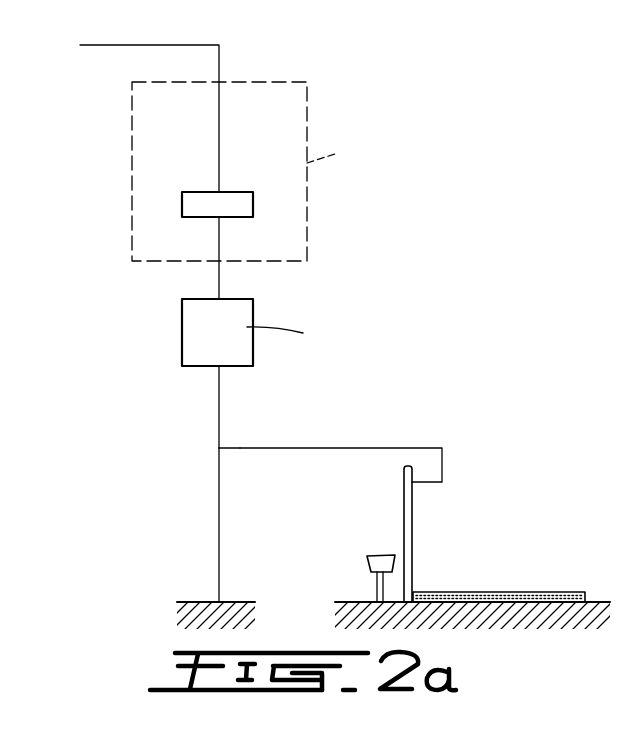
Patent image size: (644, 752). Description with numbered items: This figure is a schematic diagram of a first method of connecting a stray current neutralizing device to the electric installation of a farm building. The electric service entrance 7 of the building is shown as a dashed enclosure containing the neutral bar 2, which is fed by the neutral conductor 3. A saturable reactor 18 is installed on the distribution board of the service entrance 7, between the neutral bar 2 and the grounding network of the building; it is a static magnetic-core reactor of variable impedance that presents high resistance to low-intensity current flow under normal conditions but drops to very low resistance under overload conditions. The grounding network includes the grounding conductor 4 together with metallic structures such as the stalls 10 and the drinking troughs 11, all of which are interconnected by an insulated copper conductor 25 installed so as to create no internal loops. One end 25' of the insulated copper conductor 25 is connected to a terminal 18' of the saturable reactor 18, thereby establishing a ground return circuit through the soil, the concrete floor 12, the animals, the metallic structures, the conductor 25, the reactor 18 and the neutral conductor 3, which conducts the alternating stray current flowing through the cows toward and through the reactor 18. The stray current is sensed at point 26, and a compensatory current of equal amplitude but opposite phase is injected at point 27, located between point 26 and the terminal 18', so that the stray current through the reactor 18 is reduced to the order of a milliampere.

The neutral conductor 3 is at (219, 69).
The electric service entrance 7 is at (307, 108).
The neutral bar 2 is at (190, 203).
The saturable reactor 18 is at (282, 332).
The terminal of the saturable reactor 18' is at (270, 407).
The injection point 27 is at (215, 396).
The sensing point 26 is at (215, 433).
The end of the insulated copper conductor 25' is at (263, 432).
The insulated copper conductor 25 is at (344, 446).
The grounding conductor 4 is at (219, 526).
The stalls 10 is at (407, 500).
The drinking troughs 11 is at (367, 562).
The concrete floor 12 is at (565, 592).